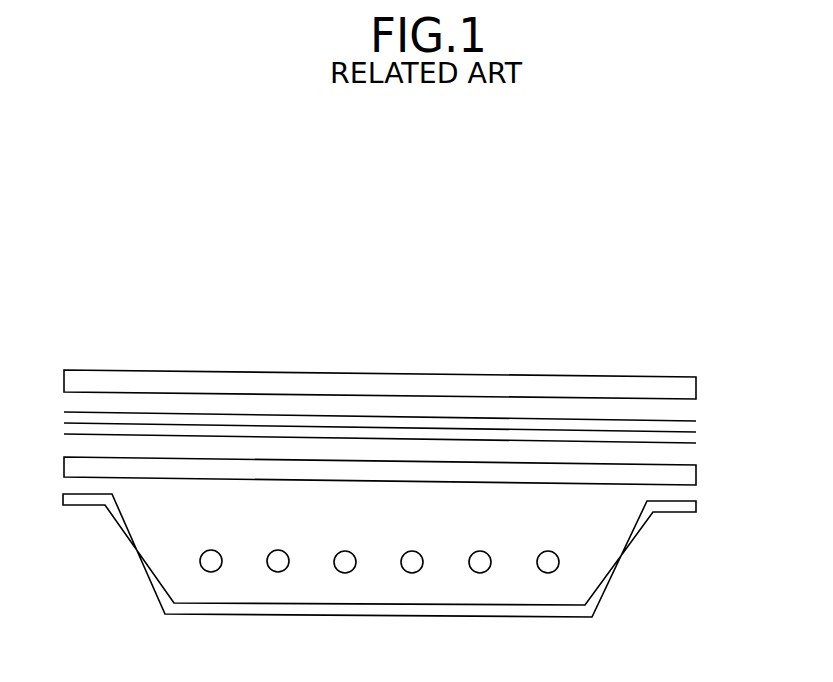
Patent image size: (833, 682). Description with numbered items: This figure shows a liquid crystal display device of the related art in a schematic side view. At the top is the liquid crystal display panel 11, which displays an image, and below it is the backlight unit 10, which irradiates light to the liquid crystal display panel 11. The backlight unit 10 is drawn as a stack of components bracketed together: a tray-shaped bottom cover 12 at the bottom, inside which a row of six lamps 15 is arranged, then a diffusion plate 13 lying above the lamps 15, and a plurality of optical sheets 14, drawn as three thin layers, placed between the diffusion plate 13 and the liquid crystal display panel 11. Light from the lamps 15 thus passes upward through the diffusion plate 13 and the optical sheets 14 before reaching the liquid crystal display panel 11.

The backlight unit 10 is at (768, 622).
The liquid crystal display panel 11 is at (692, 388).
The bottom cover 12 is at (692, 507).
The diffusion plate 13 is at (692, 476).
The optical sheets 14 is at (710, 419).
The lamps 15 is at (548, 580).